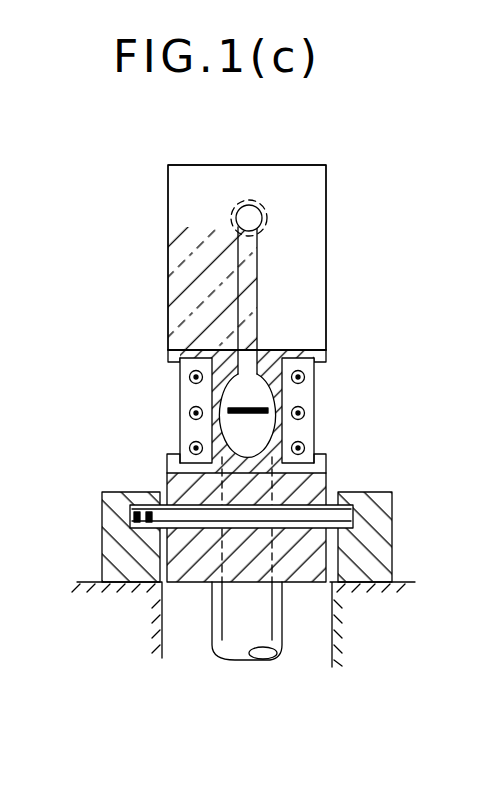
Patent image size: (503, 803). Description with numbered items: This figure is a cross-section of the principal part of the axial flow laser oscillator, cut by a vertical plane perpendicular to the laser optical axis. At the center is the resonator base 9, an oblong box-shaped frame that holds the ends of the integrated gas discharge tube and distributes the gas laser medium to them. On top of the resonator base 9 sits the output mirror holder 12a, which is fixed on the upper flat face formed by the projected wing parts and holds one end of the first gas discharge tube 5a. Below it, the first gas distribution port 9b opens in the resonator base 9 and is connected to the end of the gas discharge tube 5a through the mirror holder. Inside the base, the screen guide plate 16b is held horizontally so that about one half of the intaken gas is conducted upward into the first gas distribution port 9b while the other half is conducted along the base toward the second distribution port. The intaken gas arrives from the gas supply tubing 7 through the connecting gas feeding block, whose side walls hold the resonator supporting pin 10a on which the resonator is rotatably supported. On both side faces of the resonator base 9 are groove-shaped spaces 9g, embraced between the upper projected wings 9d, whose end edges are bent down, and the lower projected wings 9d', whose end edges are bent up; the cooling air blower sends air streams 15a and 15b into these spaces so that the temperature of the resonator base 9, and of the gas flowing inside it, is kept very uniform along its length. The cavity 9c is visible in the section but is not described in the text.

The output mirror holder 12a is at (310, 184).
The gas discharge tube 5a is at (262, 218).
The first gas distribution port 9b is at (278, 336).
The upper projected wings 9d is at (279, 352).
The lower projected wings 9d' is at (277, 458).
The air stream 15a is at (180, 378).
The air stream 15b is at (314, 377).
The groove-shaped spaces 9g is at (320, 412).
The screen guide plate 16b is at (262, 406).
The elliptical cavity 9c is at (258, 428).
The resonator base 9 is at (318, 462).
The pin 10a is at (355, 513).
The gas supply tubing 7 is at (230, 628).